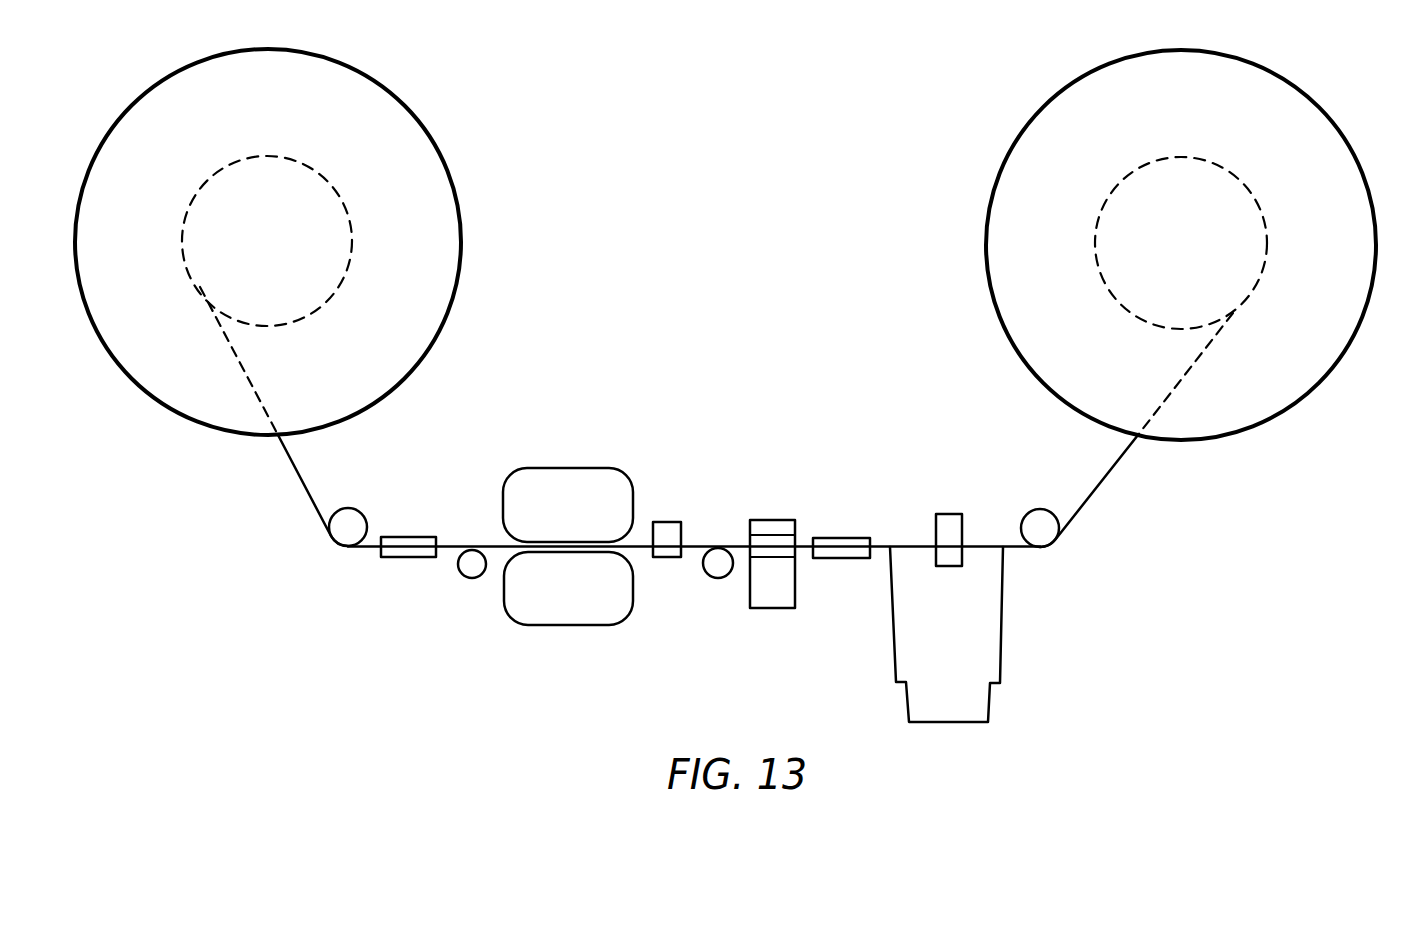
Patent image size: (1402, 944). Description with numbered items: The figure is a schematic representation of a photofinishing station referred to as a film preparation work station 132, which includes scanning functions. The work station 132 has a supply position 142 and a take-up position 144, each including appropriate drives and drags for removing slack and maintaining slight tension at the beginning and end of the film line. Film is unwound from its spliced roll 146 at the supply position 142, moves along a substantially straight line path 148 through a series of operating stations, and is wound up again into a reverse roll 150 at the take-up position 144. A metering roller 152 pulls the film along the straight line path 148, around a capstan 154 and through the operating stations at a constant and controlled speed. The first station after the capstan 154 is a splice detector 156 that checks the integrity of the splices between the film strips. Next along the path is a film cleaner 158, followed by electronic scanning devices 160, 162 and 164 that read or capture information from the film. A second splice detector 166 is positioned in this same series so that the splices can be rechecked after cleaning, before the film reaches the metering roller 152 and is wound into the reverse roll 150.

The work station 132 is at (671, 176).
The supply position 142 is at (457, 297).
The take-up position 144 is at (990, 295).
The spliced roll 146 is at (343, 203).
The straight line path 148 is at (373, 537).
The reverse roll 150 is at (1217, 167).
The metering roller 152 is at (1040, 508).
The capstan 154 is at (348, 507).
The splice detector 156 is at (415, 557).
The film cleaner 158 is at (578, 468).
The electronic scanning device 160 is at (663, 520).
The electronic scanning device 162 is at (770, 520).
The electronic scanning device 164 is at (893, 630).
The second splice detector 166 is at (850, 538).